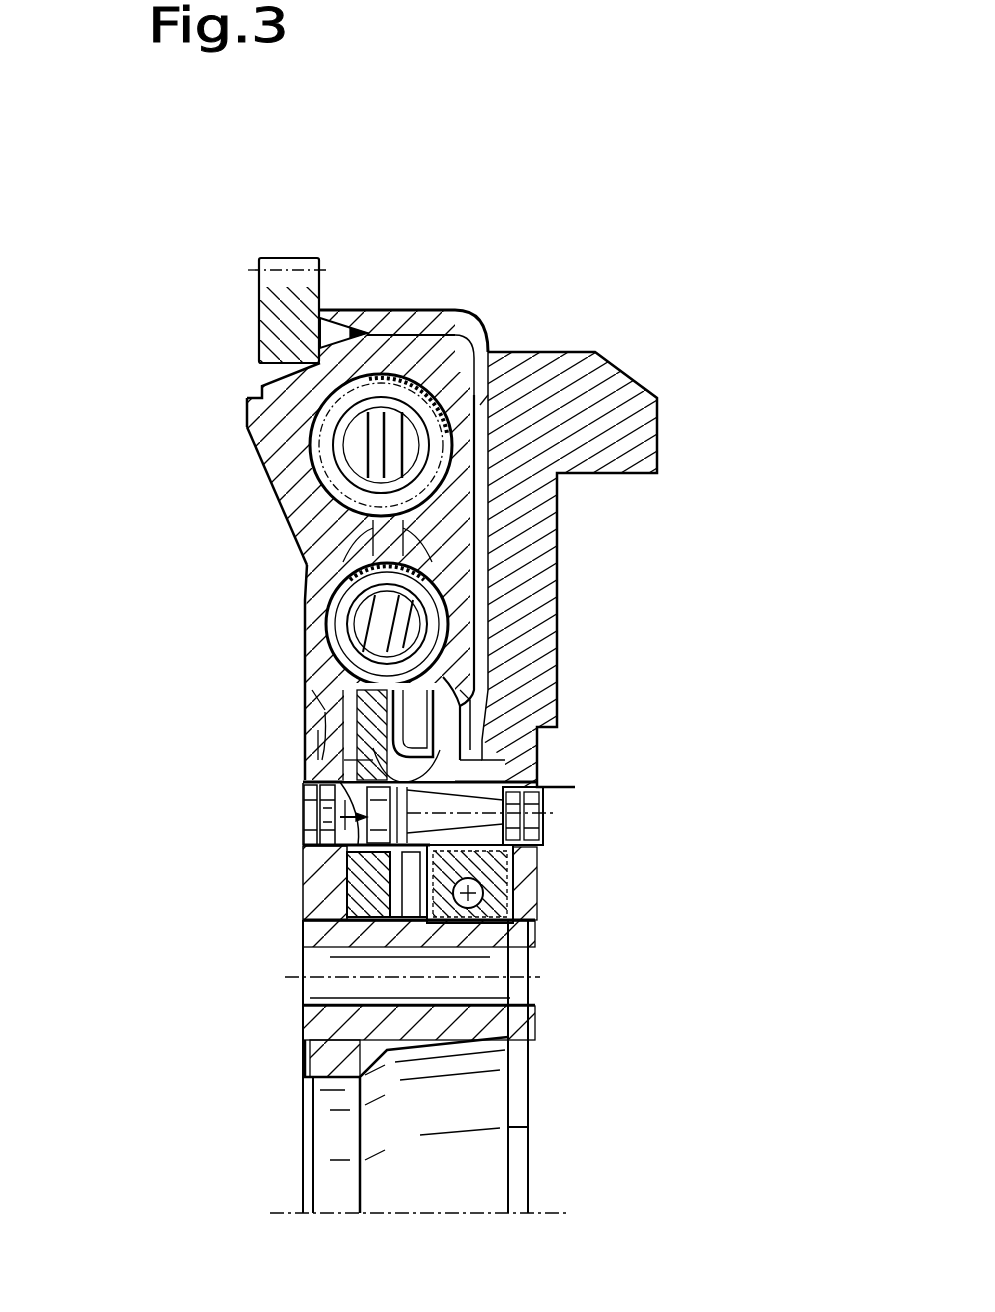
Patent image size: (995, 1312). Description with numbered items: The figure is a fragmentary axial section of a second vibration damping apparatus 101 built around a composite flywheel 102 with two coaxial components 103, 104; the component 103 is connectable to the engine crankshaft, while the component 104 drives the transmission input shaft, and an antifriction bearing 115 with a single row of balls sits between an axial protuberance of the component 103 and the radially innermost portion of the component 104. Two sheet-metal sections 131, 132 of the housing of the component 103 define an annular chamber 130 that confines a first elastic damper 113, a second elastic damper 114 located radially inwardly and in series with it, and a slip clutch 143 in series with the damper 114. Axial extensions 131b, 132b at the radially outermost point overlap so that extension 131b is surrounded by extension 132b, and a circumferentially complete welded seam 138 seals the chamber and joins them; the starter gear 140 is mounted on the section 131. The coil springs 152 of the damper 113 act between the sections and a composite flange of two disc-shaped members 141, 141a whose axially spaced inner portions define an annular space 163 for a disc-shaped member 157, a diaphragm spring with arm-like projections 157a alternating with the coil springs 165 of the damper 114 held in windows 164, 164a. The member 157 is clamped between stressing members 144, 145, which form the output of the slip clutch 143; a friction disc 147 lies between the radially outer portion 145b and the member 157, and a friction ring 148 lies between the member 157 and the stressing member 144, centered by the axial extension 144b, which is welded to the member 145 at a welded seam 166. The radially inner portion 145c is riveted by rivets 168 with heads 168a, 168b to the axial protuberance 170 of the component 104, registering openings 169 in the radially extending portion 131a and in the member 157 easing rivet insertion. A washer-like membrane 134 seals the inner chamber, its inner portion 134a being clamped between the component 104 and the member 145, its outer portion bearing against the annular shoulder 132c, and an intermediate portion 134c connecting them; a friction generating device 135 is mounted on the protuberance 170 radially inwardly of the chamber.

The vibration damping apparatus 101 is at (212, 236).
The composite flywheel 102 is at (643, 120).
The first component 103 is at (282, 380).
The second component 104 is at (595, 352).
The first elastic damper 113 is at (293, 447).
The second elastic damper 114 is at (322, 620).
The antifriction bearing 115 is at (500, 922).
The annular chamber 130 is at (340, 525).
The housing section 131 is at (325, 560).
The radially extending portion 131a is at (322, 665).
The axial extension 131b is at (400, 348).
The housing section 132 is at (455, 400).
The axial extension 132b is at (468, 313).
The annular shoulder 132c is at (478, 670).
The sealing membrane 134 is at (490, 737).
The radially inner portion of membrane 134a is at (425, 790).
The annular intermediate portion 134c is at (365, 760).
The friction generating device 135 is at (500, 762).
The welded seam 138 is at (360, 330).
The starter gear 140 is at (262, 320).
The disc-shaped member 141 is at (330, 550).
The disc-shaped member 141a is at (490, 488).
The slip clutch 143 is at (363, 827).
The stressing member 144 is at (368, 897).
The axial extension 144b is at (368, 917).
The stressing member 145 is at (495, 730).
The radially outer annular portion 145b is at (490, 708).
The radially inner portion 145c is at (515, 893).
The friction disc 147 is at (485, 687).
The friction ring 148 is at (365, 868).
The coil springs 152 is at (500, 434).
The disc-shaped member 157 is at (378, 718).
The radially disposed projections 157a is at (490, 531).
The annular space 163 is at (485, 615).
The window 164 is at (328, 642).
The window 164a is at (488, 575).
The coil springs 165 is at (480, 646).
The welded seam 166 is at (368, 928).
The rivets 168 is at (505, 838).
The rivet heads 168a is at (550, 815).
The rivet heads 168b is at (508, 818).
The registering openings 169 is at (363, 783).
The axial protuberance 170 is at (510, 858).